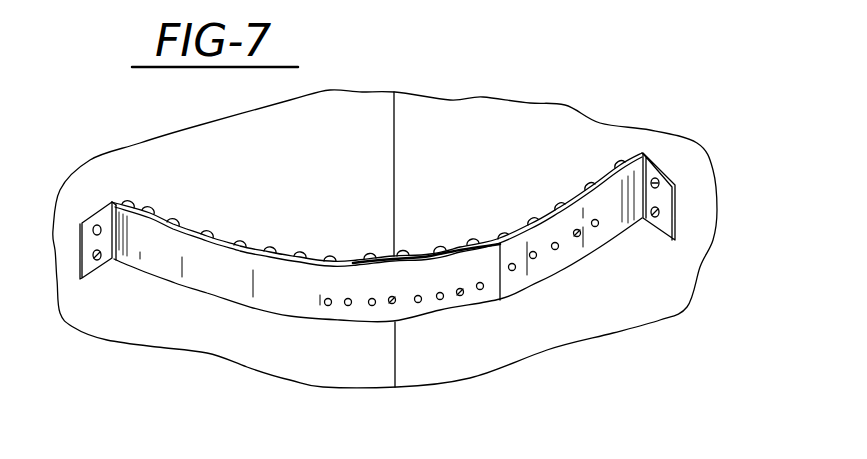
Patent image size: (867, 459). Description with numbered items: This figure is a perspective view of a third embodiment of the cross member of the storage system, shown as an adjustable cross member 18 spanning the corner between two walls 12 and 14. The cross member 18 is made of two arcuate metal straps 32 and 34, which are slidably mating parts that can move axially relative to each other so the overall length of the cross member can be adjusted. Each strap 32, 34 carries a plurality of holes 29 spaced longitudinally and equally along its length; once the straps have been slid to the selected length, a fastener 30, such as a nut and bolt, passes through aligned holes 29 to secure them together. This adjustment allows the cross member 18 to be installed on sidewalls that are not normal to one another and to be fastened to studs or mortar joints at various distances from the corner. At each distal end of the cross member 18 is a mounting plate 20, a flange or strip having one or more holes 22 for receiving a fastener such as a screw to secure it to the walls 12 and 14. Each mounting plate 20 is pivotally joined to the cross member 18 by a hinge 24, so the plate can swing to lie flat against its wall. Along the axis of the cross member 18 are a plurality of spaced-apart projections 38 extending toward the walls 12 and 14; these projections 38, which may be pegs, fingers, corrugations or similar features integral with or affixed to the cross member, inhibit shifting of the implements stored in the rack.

The wall 12 is at (343, 134).
The wall 14 is at (512, 150).
The cross member 18 is at (558, 273).
The mounting plate 20 is at (81, 281).
The hole 22 is at (108, 207).
The hinge 24 is at (112, 202).
The hole 29 is at (463, 293).
The fastener 30 is at (463, 293).
The arcuate metal strap 32 is at (423, 313).
The arcuate metal strap 34 is at (390, 258).
The projection 38 is at (250, 243).